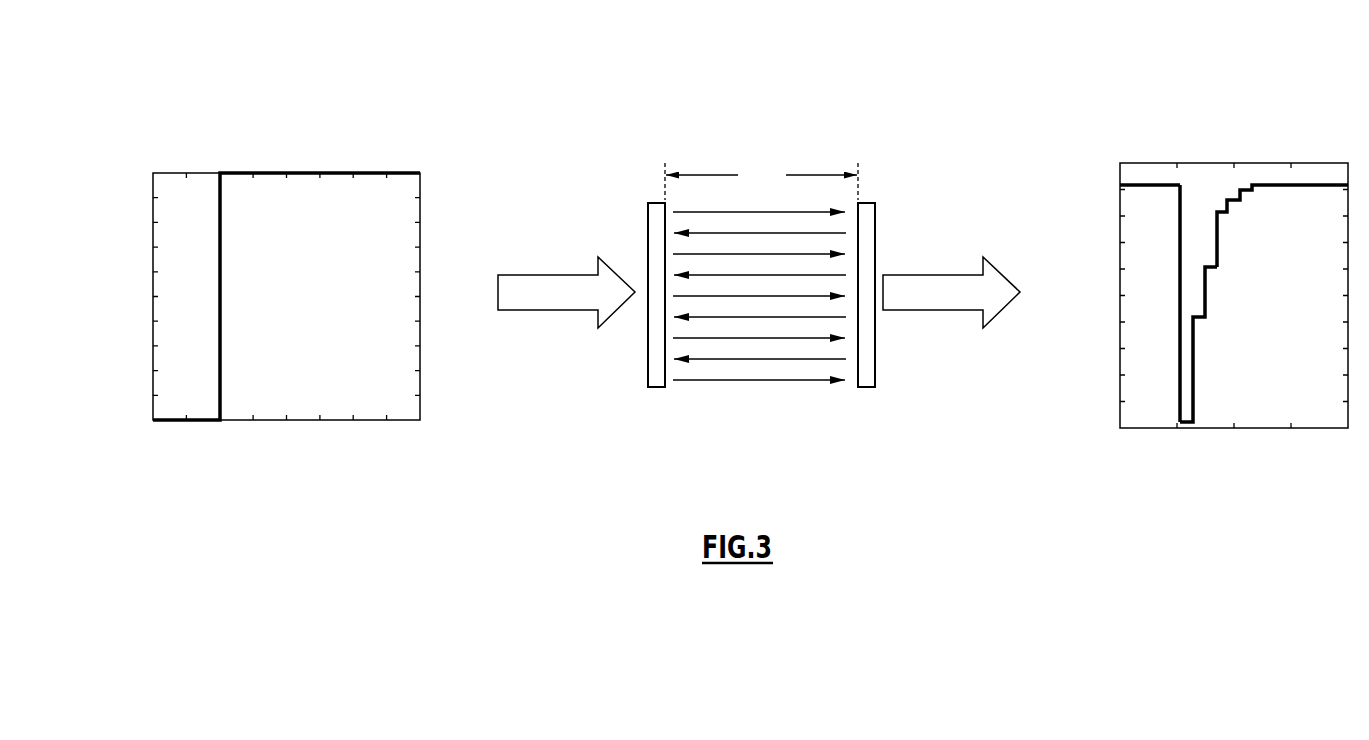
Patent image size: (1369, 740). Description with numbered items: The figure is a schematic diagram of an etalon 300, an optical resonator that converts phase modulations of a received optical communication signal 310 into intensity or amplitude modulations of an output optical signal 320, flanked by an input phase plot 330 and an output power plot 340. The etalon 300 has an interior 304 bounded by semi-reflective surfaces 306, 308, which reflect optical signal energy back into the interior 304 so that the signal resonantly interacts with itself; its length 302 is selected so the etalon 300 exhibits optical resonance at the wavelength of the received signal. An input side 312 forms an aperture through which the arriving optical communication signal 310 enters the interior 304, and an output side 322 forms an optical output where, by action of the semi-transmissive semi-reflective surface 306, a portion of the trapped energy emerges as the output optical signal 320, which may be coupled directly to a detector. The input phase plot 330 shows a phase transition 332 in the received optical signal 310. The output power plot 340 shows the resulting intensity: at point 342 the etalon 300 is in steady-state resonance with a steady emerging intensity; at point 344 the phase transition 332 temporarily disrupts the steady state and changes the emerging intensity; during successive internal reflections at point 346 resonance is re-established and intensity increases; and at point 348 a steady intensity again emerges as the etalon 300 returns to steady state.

The etalon 300 is at (757, 259).
The length 302 is at (761, 180).
The interior 304 is at (764, 392).
The semi-reflective surface 306 is at (849, 391).
The semi-reflective surface 308 is at (669, 391).
The received optical communication signal 310 is at (546, 274).
The input side 312 is at (645, 234).
The output optical signal 320 is at (925, 274).
The output side 322 is at (879, 232).
The input phase plot 330 is at (328, 128).
The phase transition 332 is at (217, 158).
The output power plot 340 is at (1221, 113).
The point 342 is at (1142, 175).
The point 344 is at (1182, 205).
The point 346 is at (1206, 294).
The point 348 is at (1299, 187).